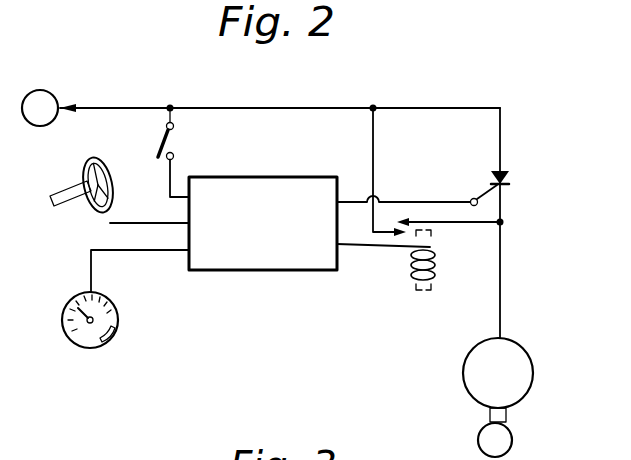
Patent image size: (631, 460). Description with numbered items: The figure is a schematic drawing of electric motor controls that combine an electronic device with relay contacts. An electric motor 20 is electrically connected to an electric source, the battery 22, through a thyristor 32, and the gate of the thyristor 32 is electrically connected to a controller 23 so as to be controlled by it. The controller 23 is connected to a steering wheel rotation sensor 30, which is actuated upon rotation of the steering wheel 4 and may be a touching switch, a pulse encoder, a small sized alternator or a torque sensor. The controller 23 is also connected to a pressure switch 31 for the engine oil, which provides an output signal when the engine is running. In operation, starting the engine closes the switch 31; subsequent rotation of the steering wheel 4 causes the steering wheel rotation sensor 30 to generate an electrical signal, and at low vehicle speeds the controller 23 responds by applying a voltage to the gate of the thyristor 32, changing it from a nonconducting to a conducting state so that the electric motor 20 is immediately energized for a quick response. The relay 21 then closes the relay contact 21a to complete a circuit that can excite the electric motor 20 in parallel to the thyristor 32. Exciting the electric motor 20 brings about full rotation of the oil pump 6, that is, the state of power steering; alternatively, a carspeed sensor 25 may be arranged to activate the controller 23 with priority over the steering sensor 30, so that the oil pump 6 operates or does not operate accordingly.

The steering wheel 4 is at (66, 190).
The oil pump 6 is at (512, 443).
The electric motor 20 is at (533, 367).
The relay 21 is at (433, 279).
The relay contact 21a is at (398, 231).
The battery 22 is at (41, 89).
The controller 23 is at (247, 271).
The carspeed sensor 25 is at (90, 348).
The steering wheel rotation sensor 30 is at (97, 214).
The pressure switch 31 is at (158, 137).
The thyristor 32 is at (483, 179).